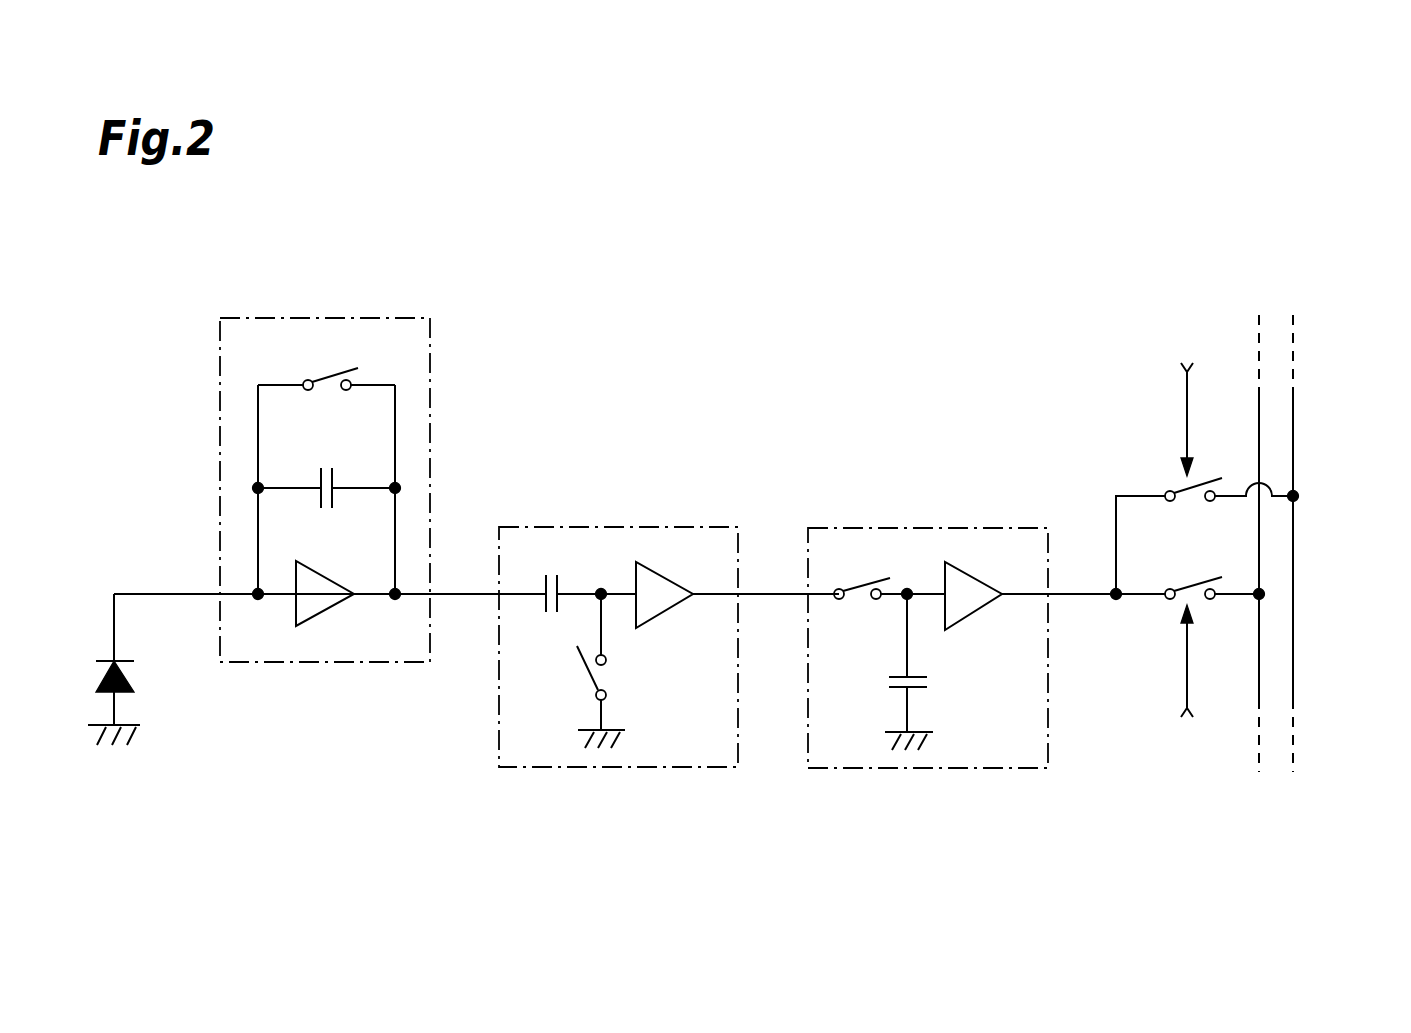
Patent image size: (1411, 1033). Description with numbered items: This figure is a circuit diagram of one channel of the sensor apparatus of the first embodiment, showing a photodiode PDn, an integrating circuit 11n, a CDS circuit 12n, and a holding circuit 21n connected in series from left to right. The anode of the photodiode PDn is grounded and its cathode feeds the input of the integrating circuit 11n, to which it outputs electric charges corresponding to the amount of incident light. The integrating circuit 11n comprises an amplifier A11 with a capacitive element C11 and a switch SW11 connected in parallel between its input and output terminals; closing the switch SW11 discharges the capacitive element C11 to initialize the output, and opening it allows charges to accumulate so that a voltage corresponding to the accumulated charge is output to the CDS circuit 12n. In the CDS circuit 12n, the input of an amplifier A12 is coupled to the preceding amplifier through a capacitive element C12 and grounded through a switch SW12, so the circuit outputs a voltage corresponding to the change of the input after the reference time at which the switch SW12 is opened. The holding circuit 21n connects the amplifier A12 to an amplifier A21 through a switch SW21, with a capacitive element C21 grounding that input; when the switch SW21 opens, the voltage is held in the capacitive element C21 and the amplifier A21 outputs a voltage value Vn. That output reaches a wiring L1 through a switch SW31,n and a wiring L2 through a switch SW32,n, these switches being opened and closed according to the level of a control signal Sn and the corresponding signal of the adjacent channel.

The integrating circuit 11n is at (431, 345).
The CDS circuit 12n is at (693, 527).
The holding circuit 21n is at (1007, 528).
The photodiode PDn is at (86, 669).
The switch SW11 is at (326, 403).
The capacitive element C11 is at (326, 509).
The amplifier A11 is at (327, 602).
The capacitive element C12 is at (542, 612).
The switch SW12 is at (632, 671).
The amplifier A12 is at (677, 600).
The switch SW21 is at (853, 608).
The capacitive element C21 is at (933, 672).
The amplifier A21 is at (981, 605).
The voltage value Vn is at (1088, 617).
The switch SW31,n is at (1177, 576).
The switch SW32,n is at (1204, 536).
The wiring L1 is at (1259, 434).
The wiring L2 is at (1293, 471).
The control signal Sn is at (1190, 678).